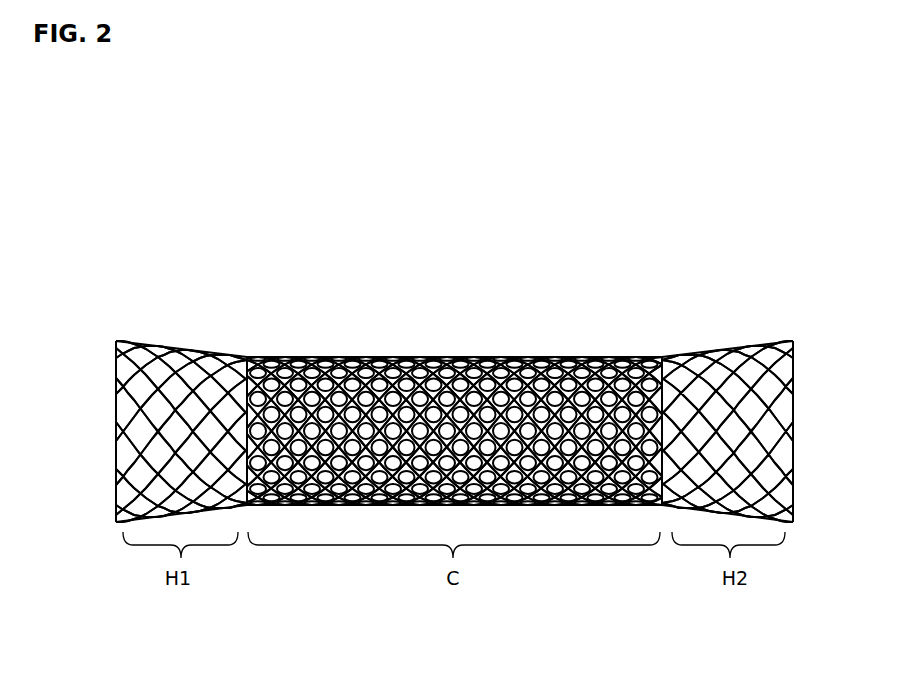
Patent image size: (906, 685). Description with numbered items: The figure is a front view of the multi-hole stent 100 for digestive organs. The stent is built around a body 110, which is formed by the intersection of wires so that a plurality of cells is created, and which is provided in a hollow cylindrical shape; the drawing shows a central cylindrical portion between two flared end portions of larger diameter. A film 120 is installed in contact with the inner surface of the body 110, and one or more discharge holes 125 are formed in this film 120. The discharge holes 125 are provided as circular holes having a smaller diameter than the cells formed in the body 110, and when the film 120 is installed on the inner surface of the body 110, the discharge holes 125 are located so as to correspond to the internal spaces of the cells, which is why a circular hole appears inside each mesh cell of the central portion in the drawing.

The multi-hole stent 100 is at (453, 306).
The body 110 is at (705, 375).
The film 120 is at (752, 378).
The discharge holes 125 is at (555, 408).